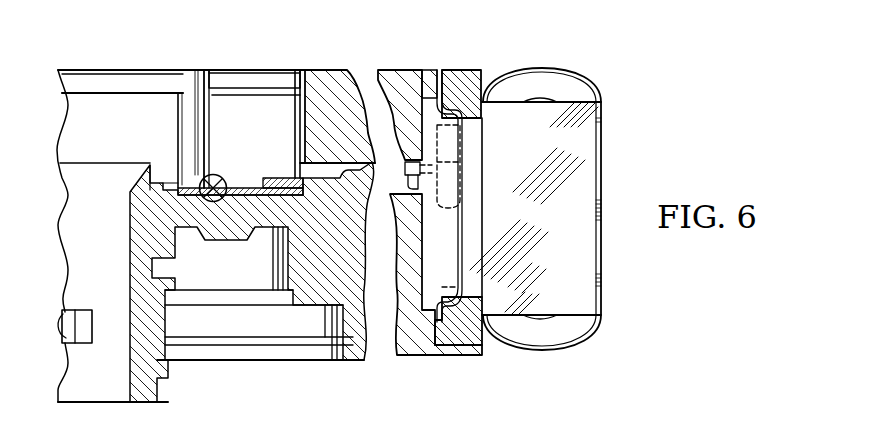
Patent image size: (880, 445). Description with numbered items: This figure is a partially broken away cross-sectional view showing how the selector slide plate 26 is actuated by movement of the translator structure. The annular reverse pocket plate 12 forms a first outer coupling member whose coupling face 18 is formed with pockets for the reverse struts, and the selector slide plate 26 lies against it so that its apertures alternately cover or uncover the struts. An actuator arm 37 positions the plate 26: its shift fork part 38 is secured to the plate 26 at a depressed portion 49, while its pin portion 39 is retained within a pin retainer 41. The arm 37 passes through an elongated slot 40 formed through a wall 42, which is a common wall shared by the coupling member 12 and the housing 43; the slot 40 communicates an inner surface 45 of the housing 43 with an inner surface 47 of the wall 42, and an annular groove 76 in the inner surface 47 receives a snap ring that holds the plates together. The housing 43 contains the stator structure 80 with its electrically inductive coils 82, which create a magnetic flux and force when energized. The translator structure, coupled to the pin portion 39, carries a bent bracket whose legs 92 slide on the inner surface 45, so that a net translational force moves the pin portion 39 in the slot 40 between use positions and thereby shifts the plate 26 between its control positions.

The reverse pocket plate 12 is at (194, 64).
The coupling face 18 is at (246, 196).
The selector slide plate 26 is at (243, 178).
The actuator arm 37 is at (279, 162).
The shift fork part 38 is at (360, 158).
The pin portion 39 is at (413, 152).
The elongated slot 40 is at (375, 158).
The pin retainer 41 is at (460, 150).
The wall 42 is at (297, 78).
The housing 43 is at (437, 66).
The inner surface 45 is at (433, 320).
The inner surface 47 is at (296, 146).
The depressed portion 49 is at (258, 194).
The annular groove 76 is at (117, 91).
The stator structure 80 is at (558, 62).
The electrically inductive coils 82 is at (558, 87).
The legs 92 is at (444, 110).